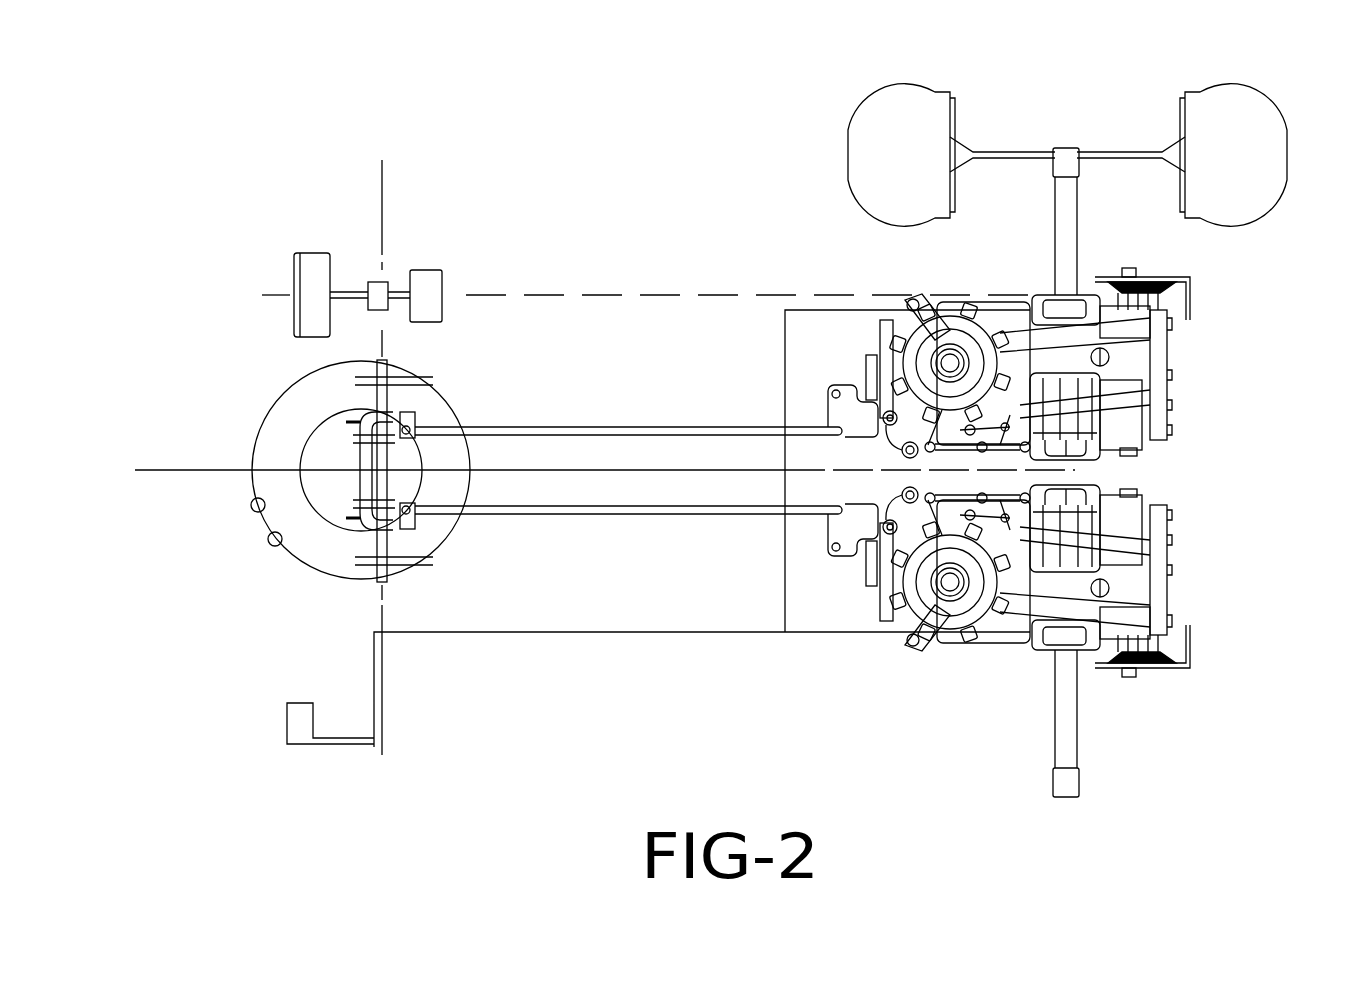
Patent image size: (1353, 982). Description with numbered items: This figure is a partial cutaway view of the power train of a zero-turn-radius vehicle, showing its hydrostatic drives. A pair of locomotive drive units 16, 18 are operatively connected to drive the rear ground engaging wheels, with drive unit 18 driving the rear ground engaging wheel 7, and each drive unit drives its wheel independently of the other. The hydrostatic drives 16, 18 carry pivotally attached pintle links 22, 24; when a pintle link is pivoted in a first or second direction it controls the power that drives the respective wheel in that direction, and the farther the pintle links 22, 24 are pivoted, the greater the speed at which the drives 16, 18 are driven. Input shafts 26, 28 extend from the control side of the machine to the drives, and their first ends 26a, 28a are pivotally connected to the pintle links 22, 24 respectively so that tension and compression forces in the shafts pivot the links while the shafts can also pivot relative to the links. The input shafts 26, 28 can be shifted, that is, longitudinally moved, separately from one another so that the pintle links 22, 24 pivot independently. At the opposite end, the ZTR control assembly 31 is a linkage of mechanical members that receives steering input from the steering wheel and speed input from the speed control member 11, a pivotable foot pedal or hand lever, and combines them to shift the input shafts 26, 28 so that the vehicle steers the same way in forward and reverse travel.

The rear ground engaging wheel 7 is at (1280, 185).
The speed control member 11 is at (402, 253).
The locomotive drive unit 16 is at (1190, 563).
The locomotive drive unit 18 is at (1185, 387).
The pintle link 22 is at (858, 548).
The pintle link 24 is at (863, 392).
The input shaft 26 is at (600, 516).
The first end of input shaft 26a is at (812, 532).
The input shaft 28 is at (600, 426).
The first end of input shaft 28a is at (818, 415).
The ZTR control assembly 31 is at (458, 387).